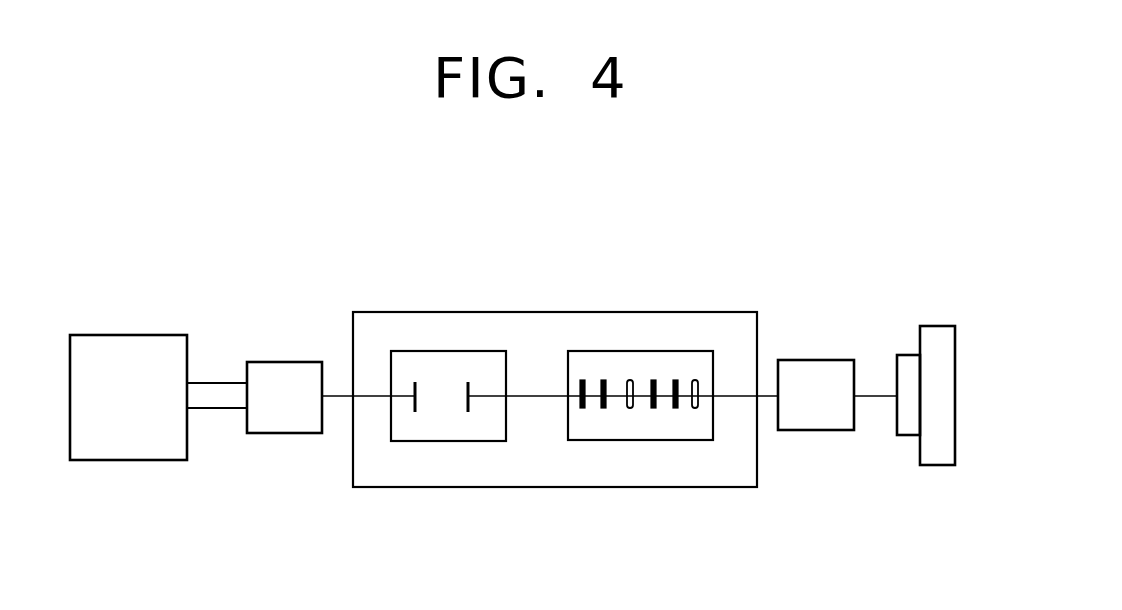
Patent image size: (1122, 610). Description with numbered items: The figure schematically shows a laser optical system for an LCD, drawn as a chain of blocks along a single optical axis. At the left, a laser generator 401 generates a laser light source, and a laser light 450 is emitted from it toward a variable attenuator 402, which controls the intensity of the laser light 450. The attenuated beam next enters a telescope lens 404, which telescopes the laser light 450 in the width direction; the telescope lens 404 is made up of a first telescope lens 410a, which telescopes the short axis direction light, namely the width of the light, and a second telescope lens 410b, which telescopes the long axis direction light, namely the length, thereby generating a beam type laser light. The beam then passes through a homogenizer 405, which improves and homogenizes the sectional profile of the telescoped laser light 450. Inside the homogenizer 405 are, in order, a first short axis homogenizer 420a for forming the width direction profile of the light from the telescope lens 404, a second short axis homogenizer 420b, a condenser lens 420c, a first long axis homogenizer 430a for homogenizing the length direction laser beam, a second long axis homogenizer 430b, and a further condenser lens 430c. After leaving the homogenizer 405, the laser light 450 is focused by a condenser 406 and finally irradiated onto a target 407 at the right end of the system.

The laser generator 401 is at (125, 335).
The laser light 450 is at (213, 383).
The variable attenuator 402 is at (280, 362).
The telescope lens 404 is at (446, 350).
The homogenizer 405 is at (637, 350).
The condenser 406 is at (813, 358).
The target 407 is at (935, 326).
The first telescope lens 410a is at (413, 412).
The second telescope lens 410b is at (468, 412).
The first short axis homogenizer 420a is at (582, 408).
The second short axis homogenizer 420b is at (603, 408).
The condenser lens 420c is at (630, 408).
The first long axis homogenizer 430a is at (653, 408).
The second long axis homogenizer 430b is at (675, 408).
The condenser lens 430c is at (695, 408).